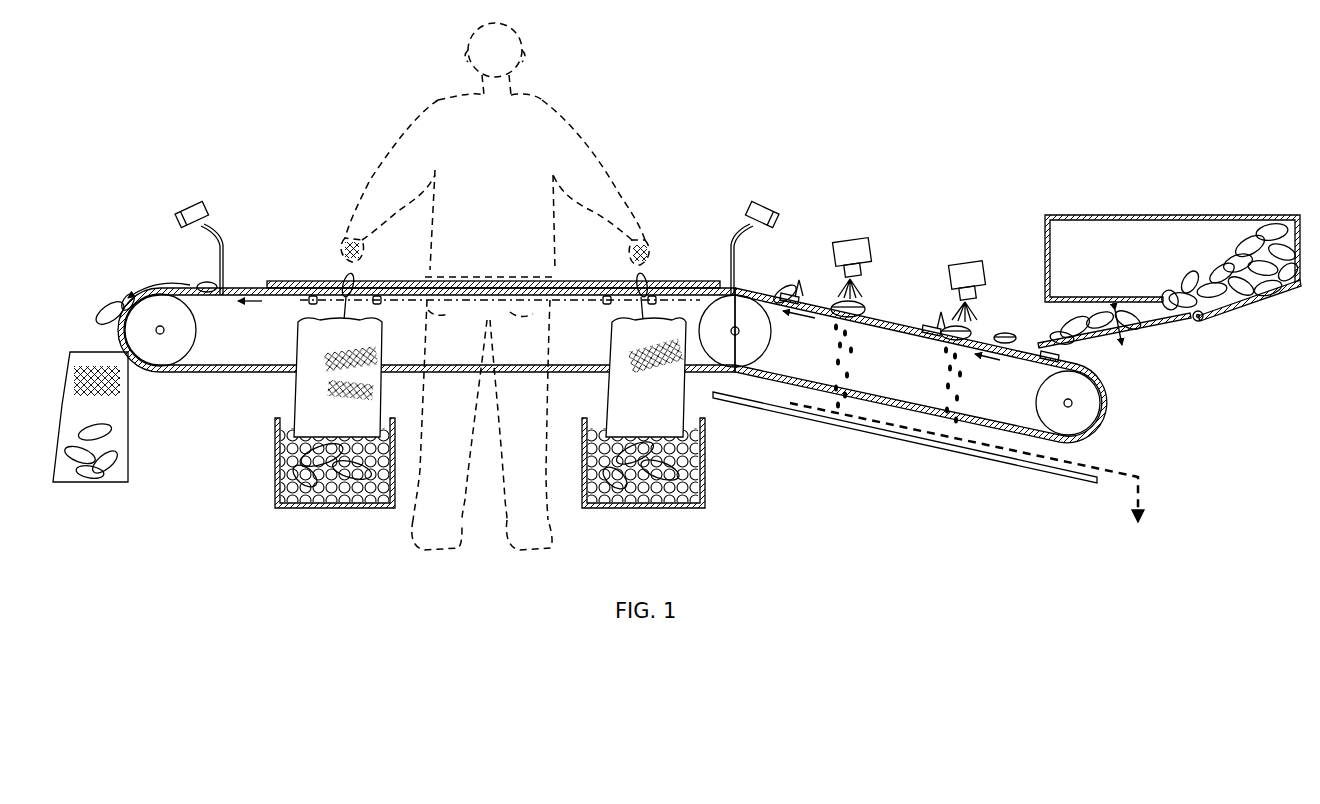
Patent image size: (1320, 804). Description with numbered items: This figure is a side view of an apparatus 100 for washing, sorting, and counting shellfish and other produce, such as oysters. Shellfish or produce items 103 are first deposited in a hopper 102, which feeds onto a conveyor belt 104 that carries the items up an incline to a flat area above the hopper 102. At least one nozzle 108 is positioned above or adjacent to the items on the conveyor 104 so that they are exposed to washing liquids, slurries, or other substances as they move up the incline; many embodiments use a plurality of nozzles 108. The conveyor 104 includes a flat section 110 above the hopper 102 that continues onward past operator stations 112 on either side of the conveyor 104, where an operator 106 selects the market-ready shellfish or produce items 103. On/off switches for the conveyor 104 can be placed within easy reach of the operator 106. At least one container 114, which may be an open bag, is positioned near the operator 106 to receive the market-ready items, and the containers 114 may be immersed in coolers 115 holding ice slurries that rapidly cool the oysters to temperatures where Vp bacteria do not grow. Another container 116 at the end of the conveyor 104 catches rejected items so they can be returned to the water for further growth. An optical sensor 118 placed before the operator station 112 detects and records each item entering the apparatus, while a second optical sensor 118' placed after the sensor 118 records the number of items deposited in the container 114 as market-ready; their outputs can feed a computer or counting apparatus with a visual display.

The apparatus 100 is at (807, 154).
The hopper 102 is at (1271, 214).
The shellfish or produce item 103 is at (1010, 328).
The conveyor belt 104 is at (1094, 376).
The operator 106 is at (561, 89).
The nozzle 108 is at (961, 262).
The flat section 110 is at (721, 292).
The operator station 112 is at (480, 548).
The container 114 is at (300, 466).
The cooler 115 is at (277, 447).
The container 116 is at (88, 483).
The optical sensor 118 is at (782, 238).
The optical sensor 118' is at (222, 238).